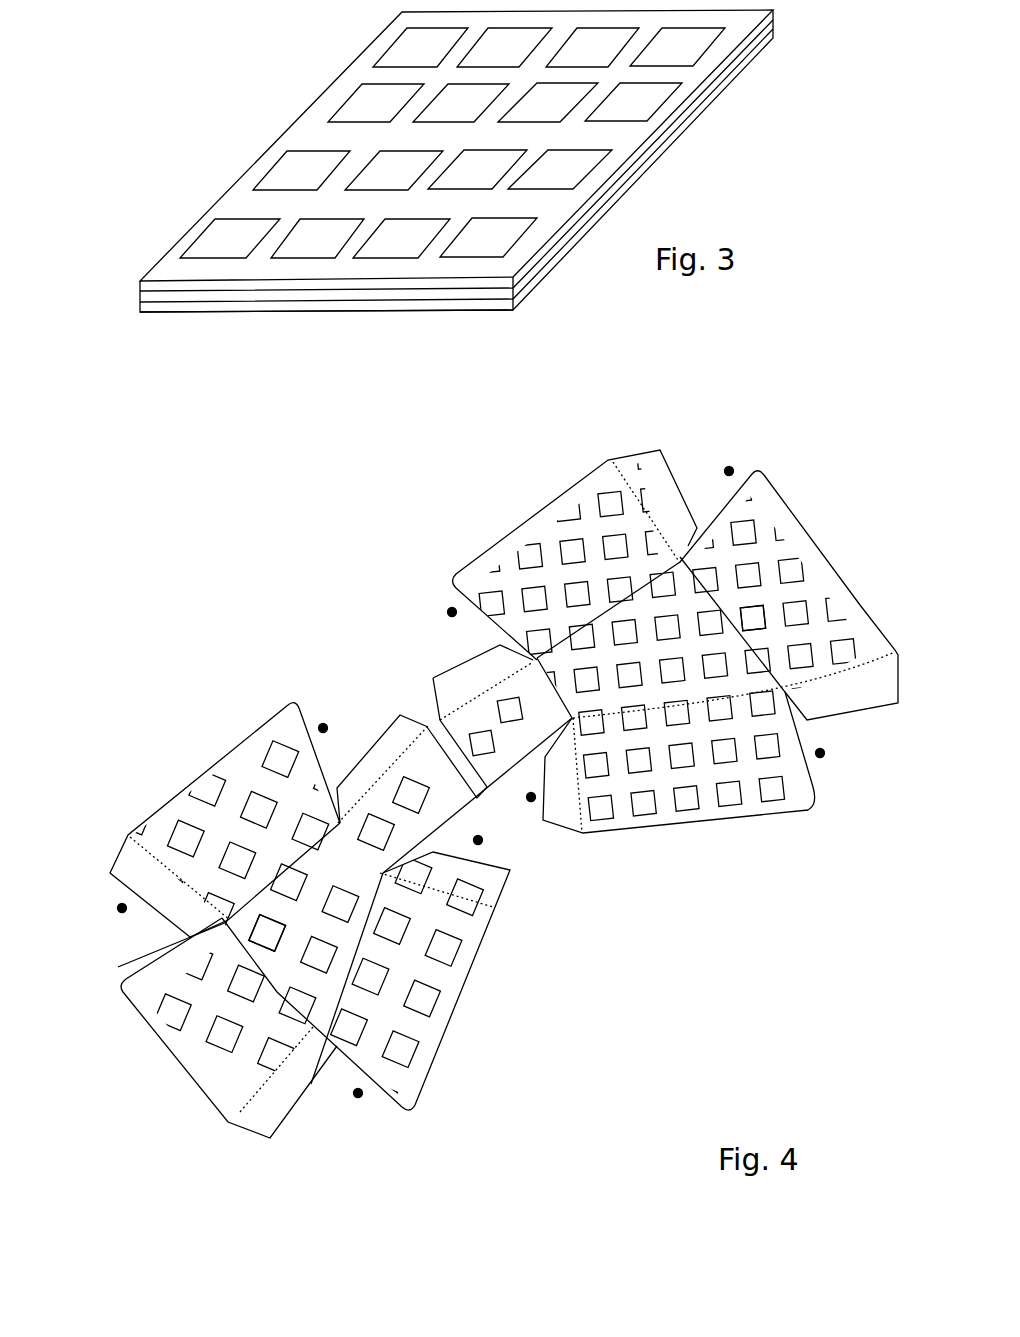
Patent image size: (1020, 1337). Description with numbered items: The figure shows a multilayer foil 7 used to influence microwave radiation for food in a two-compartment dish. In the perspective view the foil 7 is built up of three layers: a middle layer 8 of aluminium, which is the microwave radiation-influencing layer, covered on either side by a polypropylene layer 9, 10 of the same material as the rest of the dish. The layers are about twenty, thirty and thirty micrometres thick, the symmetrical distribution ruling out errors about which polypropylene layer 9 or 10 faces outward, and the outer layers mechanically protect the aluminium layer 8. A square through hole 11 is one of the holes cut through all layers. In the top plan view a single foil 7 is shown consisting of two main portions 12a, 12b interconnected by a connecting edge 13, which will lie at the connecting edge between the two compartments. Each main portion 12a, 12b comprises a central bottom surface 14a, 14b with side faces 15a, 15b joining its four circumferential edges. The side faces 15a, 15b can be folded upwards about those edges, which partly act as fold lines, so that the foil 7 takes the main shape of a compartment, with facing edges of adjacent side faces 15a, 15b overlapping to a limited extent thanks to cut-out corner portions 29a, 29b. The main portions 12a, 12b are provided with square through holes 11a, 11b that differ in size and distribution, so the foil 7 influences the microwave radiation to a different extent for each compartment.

In FIG. 3, the multilayer foil 7 is at (246, 77).
In FIG. 4, the multilayer foil 7 is at (262, 573).
In FIG. 3, the middle layer 8 is at (402, 295).
In FIG. 3, the polypropylene layer 9 is at (325, 307).
In FIG. 3, the polypropylene layer 10 is at (477, 285).
In FIG. 3, the through hole 11 is at (323, 240).
In FIG. 4, the square through holes 11a is at (755, 618).
In FIG. 4, the square through holes 11b is at (227, 922).
In FIG. 4, the main portion 12a is at (646, 721).
In FIG. 4, the main portion 12b is at (390, 910).
In FIG. 4, the connecting edge 13 is at (440, 737).
In FIG. 4, the central bottom surface 14a is at (651, 655).
In FIG. 4, the central bottom surface 14b is at (330, 940).
In FIG. 4, the side faces 15a is at (548, 528).
In FIG. 4, the side faces 15b is at (222, 788).
In FIG. 4, the cut-out corner portions 29a is at (733, 470).
In FIG. 4, the cut-out corner portions 29b is at (323, 728).